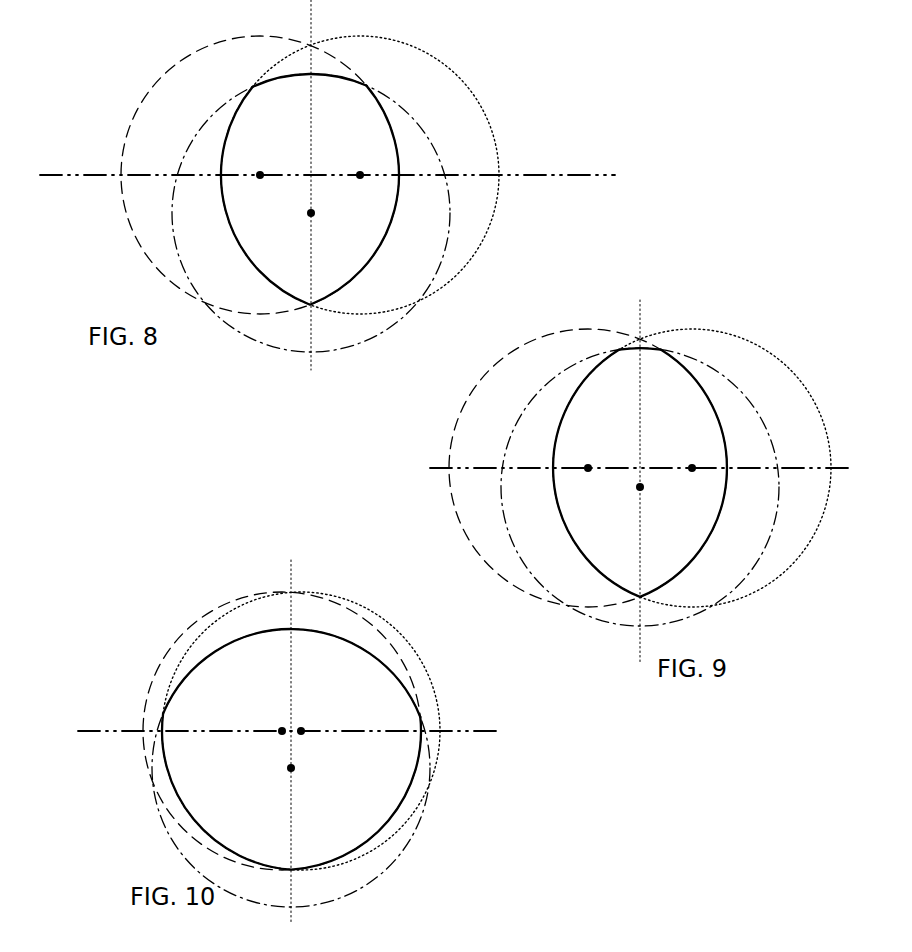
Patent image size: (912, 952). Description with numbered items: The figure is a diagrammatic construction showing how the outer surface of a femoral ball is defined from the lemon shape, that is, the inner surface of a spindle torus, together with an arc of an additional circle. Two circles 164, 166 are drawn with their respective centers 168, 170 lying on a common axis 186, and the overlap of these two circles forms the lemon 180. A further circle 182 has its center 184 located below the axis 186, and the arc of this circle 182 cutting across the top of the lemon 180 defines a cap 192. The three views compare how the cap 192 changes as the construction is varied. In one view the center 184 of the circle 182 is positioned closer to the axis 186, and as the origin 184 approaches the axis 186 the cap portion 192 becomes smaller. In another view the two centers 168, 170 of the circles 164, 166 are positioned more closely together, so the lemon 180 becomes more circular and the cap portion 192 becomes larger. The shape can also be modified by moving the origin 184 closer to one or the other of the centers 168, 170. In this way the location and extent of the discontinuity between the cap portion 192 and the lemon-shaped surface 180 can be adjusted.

In FIG. 8, the circle 164 is at (137, 112).
In FIG. 9, the circle 164 is at (460, 410).
In FIG. 10, the circle 164 is at (147, 678).
In FIG. 8, the circle 166 is at (503, 150).
In FIG. 9, the circle 166 is at (718, 330).
In FIG. 10, the circle 166 is at (352, 602).
In FIG. 8, the center 168 is at (260, 175).
In FIG. 9, the center 168 is at (588, 468).
In FIG. 10, the center 168 is at (282, 731).
In FIG. 8, the center 170 is at (360, 175).
In FIG. 9, the center 170 is at (692, 468).
In FIG. 10, the center 170 is at (301, 731).
In FIG. 8, the lemon 180 is at (385, 110).
In FIG. 9, the lemon 180 is at (565, 535).
In FIG. 10, the lemon 180 is at (180, 805).
In FIG. 8, the circle 182 is at (408, 116).
In FIG. 9, the circle 182 is at (507, 453).
In FIG. 10, the circle 182 is at (145, 745).
In FIG. 8, the center 184 is at (311, 213).
In FIG. 9, the center 184 is at (640, 487).
In FIG. 10, the center 184 is at (291, 768).
In FIG. 8, the axis 186 is at (571, 178).
In FIG. 9, the axis 186 is at (431, 468).
In FIG. 10, the axis 186 is at (500, 731).
In FIG. 8, the cap 192 is at (278, 75).
In FIG. 9, the cap 192 is at (635, 348).
In FIG. 10, the cap 192 is at (260, 627).